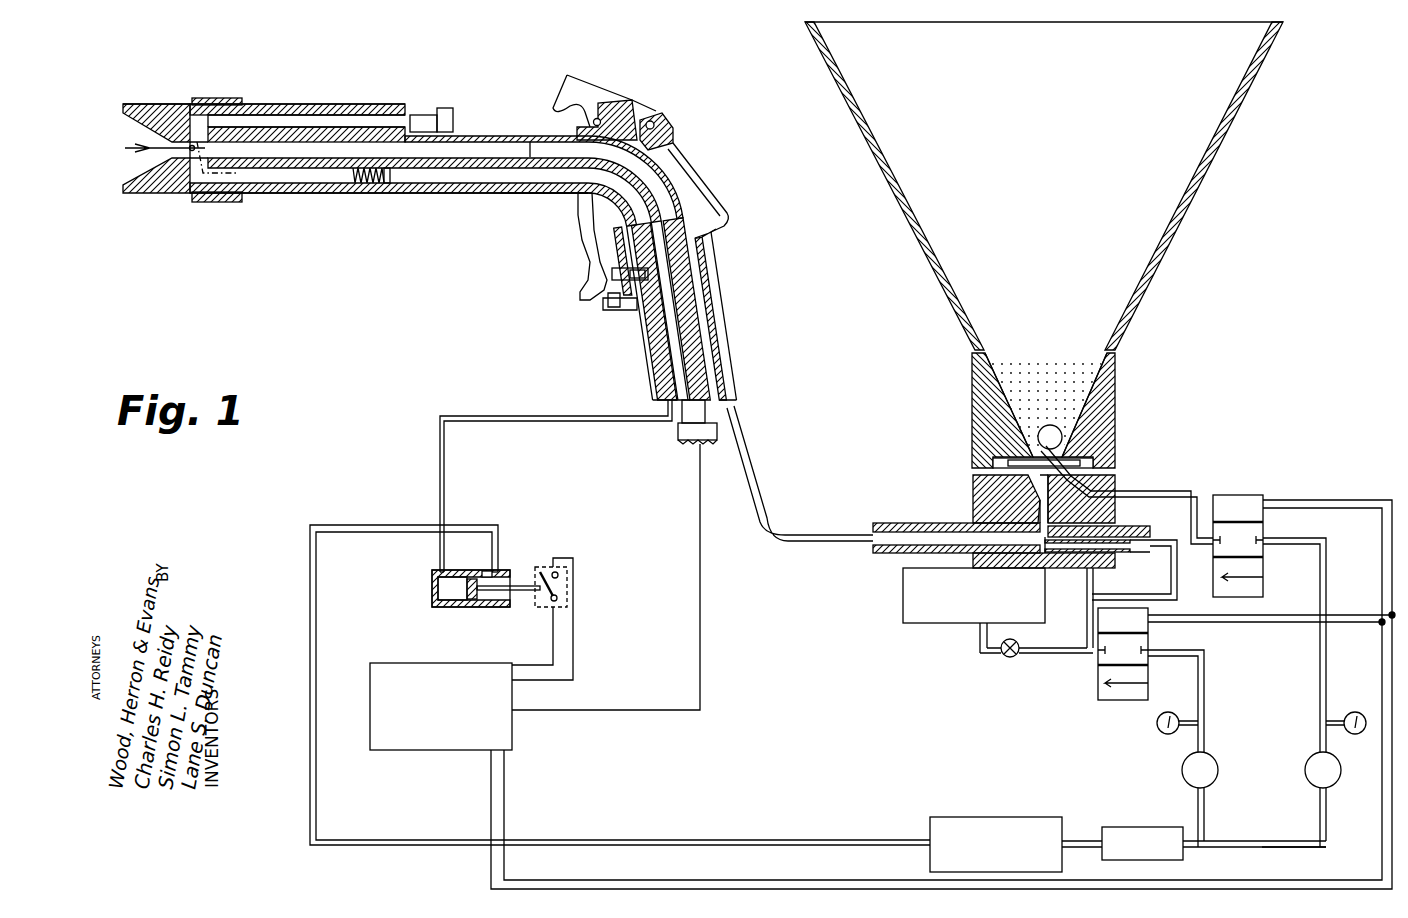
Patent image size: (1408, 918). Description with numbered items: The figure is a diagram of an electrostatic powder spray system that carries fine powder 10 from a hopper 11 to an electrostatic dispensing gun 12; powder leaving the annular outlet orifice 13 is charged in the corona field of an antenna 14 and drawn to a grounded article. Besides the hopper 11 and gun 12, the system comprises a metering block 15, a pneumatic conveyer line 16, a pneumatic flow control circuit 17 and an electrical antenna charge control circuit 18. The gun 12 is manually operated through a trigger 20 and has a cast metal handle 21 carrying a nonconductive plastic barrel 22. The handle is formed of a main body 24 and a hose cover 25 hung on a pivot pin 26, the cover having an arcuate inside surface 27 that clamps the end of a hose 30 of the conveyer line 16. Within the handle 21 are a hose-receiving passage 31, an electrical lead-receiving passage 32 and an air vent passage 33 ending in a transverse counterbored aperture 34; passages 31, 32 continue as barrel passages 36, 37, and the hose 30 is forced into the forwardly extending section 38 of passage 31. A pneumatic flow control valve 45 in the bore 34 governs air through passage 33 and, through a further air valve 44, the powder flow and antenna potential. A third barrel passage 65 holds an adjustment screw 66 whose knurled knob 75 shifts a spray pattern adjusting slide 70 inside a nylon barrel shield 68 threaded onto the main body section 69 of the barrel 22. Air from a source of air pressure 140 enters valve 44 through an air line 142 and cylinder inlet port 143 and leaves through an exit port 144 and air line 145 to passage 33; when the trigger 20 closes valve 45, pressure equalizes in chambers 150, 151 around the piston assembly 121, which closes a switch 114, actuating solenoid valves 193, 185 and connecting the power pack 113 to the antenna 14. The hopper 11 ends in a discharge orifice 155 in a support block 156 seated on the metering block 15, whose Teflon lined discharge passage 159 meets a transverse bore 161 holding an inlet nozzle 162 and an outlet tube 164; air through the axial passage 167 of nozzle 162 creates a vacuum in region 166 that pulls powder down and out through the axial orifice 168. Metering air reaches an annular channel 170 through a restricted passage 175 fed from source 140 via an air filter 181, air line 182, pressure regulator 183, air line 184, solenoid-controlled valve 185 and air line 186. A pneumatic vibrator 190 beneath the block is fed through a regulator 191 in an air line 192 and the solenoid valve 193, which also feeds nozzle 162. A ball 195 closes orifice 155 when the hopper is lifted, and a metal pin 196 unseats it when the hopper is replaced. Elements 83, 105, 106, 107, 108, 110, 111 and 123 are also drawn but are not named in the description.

The fine powder 10 is at (1048, 371).
The hopper 11 is at (1200, 203).
The electrostatic dispensing gun 12 is at (437, 238).
The annular outlet orifice 13 is at (122, 112).
The antenna 14 is at (135, 149).
The metering block 15 is at (965, 492).
The pneumatic conveyer line 16 is at (832, 550).
The pneumatic flow control circuit 17 is at (1158, 776).
The electrical antenna charge control circuit 18 is at (576, 736).
The trigger 20 is at (590, 250).
The cast metal handle 21 is at (626, 98).
The plastic barrel 22 is at (376, 104).
The main body 24 is at (636, 326).
The hose cover 25 is at (716, 197).
The pivot pin 26 is at (656, 123).
The arcuate inside surface 27 is at (704, 292).
The hose 30 is at (724, 338).
The hose-receiving passage 31 is at (675, 140).
The electrical lead-receiving passage 32 is at (661, 366).
The air vent passage 33 is at (653, 340).
The transverse counterbored aperture 34 is at (650, 273).
The barrel passage 36 is at (490, 141).
The barrel passage 37 is at (472, 184).
The forwardly extending section 38 is at (560, 136).
The air valve 44 is at (420, 598).
The pneumatic flow control valve 45 is at (603, 293).
The third barrel passage 65 is at (312, 103).
The adjustment screw 66 is at (274, 81).
The barrel shield 68 is at (209, 98).
The main body section 69 is at (262, 103).
The spray pattern adjusting slide 70 is at (158, 103).
The knurled knob 75 is at (450, 112).
The nozzle lower lip 83 is at (132, 178).
The air passage 105 is at (303, 180).
The spring 106 is at (362, 184).
The spring seat 107 is at (371, 206).
The barrel end 108 is at (530, 189).
The fitting 110 is at (690, 420).
The electric cable 111 is at (718, 434).
The power pack 113 is at (392, 753).
The switch 114 is at (575, 586).
The piston assembly 121 is at (472, 601).
The piston rod 123 is at (520, 600).
The source of air pressure 140 is at (985, 817).
The air line 142 is at (779, 841).
The cylinder inlet port 143 is at (499, 571).
The exit port 144 is at (440, 570).
The air line 145 is at (508, 436).
The chamber 150 is at (485, 576).
The chamber 151 is at (446, 606).
The discharge orifice 155 is at (1022, 441).
The support block 156 is at (986, 411).
The discharge passage 159 is at (1048, 500).
The transverse bore 161 is at (1076, 556).
The inlet nozzle 162 is at (1120, 530).
The outlet tube 164 is at (900, 527).
The vacuum region 166 is at (1080, 578).
The axial passage 167 is at (1115, 553).
The axial orifice 168 is at (905, 560).
The annular channel 170 is at (996, 466).
The restricted passage 175 is at (1108, 486).
The air filter 181 is at (1163, 826).
The air line 182 is at (1272, 852).
The pressure regulator 183 is at (1330, 790).
The air line 184 is at (1330, 569).
The solenoid-controlled valve 185 is at (1266, 569).
The air line 186 is at (1195, 538).
The pneumatic vibrator 190 is at (940, 630).
The regulator 191 is at (1220, 766).
The air line 192 is at (1208, 797).
The solenoid valve 193 is at (1100, 691).
The ball 195 is at (1061, 433).
The metal pin 196 is at (1071, 461).